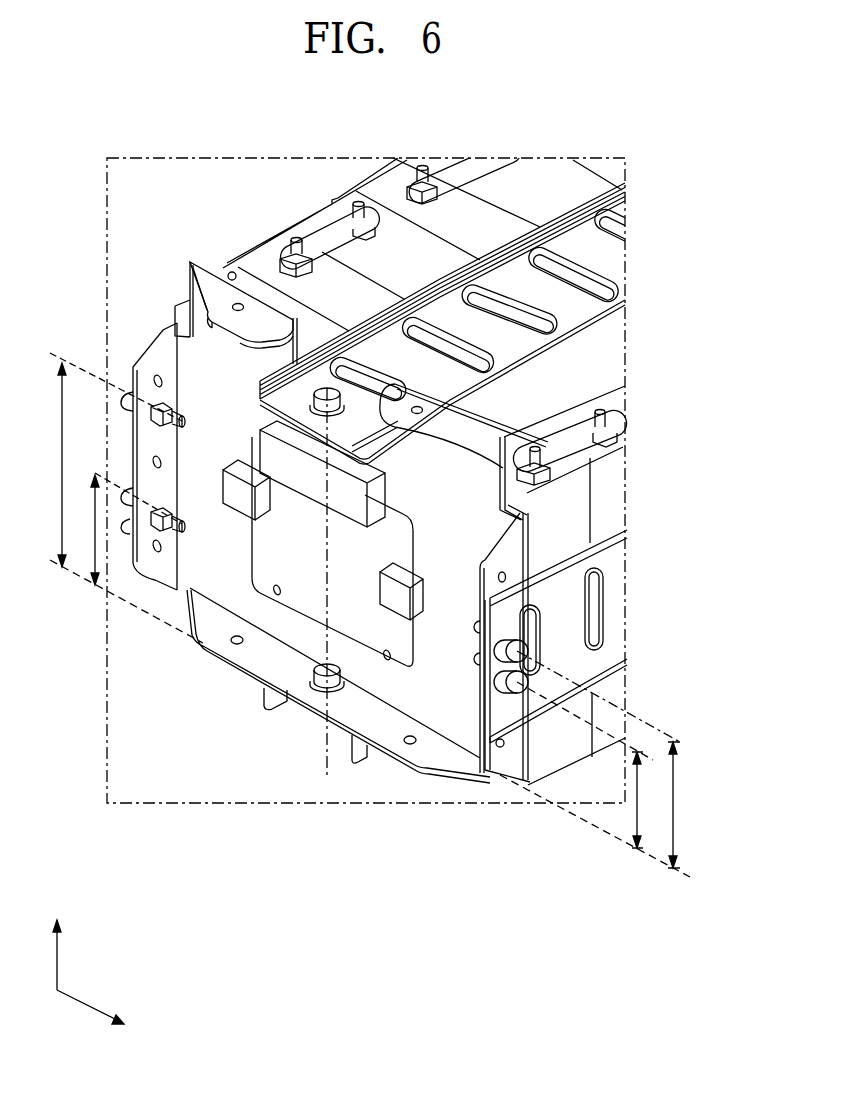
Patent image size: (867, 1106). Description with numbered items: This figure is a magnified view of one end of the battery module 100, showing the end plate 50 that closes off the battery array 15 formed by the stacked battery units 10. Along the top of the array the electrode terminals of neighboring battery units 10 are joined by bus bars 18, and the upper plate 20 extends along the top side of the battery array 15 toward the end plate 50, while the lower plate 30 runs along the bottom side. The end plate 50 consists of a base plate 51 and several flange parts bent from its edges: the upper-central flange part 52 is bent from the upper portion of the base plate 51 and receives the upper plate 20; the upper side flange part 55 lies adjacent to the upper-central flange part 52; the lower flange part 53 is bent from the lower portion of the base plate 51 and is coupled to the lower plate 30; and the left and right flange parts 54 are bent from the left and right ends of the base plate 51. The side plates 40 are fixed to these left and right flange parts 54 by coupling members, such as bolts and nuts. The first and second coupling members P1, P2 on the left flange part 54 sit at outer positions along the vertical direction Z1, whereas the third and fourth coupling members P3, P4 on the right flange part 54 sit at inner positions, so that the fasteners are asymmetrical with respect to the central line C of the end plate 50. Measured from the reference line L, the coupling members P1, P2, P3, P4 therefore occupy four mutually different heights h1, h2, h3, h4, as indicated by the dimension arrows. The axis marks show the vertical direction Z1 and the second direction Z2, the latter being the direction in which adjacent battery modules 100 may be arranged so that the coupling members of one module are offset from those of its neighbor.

The battery module 100 is at (630, 253).
The battery unit 10 is at (612, 372).
The battery array 15 is at (315, 219).
The bus bar 18 is at (315, 238).
The upper plate 20 is at (578, 240).
The lower plate 30 is at (363, 752).
The side plate 40 is at (612, 667).
The end plate 50 is at (690, 400).
The base plate 51 is at (457, 594).
The upper-central flange part 52 is at (380, 481).
The lower flange part 53 is at (247, 650).
The left and right flange parts 54 is at (150, 353).
The upper side flange part 55 is at (214, 278).
The first coupling member P1 is at (185, 428).
The second coupling member P2 is at (185, 523).
The third coupling member P3 is at (473, 628).
The fourth coupling member P4 is at (473, 659).
The central line C is at (327, 594).
The reference line L is at (702, 883).
The first height h1 is at (51, 465).
The second height h2 is at (82, 530).
The third height h3 is at (687, 805).
The fourth height h4 is at (651, 800).
The vertical direction Z1 is at (57, 941).
The second direction Z2 is at (104, 1016).